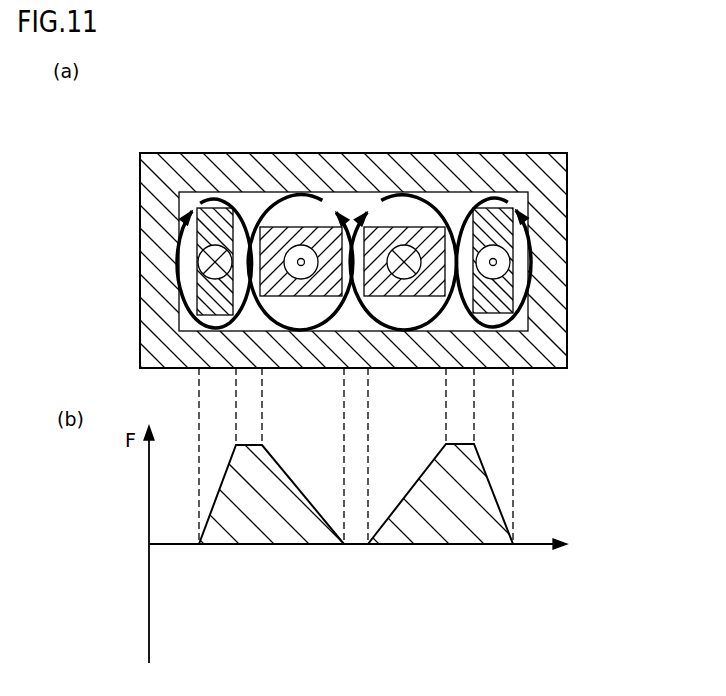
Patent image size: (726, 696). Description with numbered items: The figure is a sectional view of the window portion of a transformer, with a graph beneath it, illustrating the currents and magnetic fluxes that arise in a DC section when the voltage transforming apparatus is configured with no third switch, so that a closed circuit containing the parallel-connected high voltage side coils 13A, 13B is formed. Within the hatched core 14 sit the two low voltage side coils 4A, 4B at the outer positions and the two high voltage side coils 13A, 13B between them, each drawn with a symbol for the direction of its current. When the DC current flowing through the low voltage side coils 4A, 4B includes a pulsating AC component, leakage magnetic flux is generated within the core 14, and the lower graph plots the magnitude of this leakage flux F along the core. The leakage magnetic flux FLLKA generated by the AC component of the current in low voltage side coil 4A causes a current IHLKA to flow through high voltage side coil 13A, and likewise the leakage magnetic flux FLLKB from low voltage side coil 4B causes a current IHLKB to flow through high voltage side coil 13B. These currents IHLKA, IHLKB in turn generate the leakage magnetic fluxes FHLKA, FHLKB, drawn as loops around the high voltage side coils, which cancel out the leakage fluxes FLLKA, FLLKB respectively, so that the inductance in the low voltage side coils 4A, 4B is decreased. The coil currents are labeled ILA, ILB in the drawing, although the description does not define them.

The core 14 is at (161, 153).
The low voltage side coil 4A is at (352, 218).
The low voltage side coil 4B is at (352, 216).
The high voltage side coil 13A is at (350, 192).
The high voltage side coil 13B is at (350, 192).
The leakage magnetic flux FHLKA is at (264, 195).
The leakage magnetic flux FHLKB is at (440, 200).
The leakage magnetic flux FLLKA is at (180, 260).
The leakage magnetic flux FLLKB is at (530, 250).
The current IHLKA is at (300, 245).
The current IHLKB is at (405, 245).
The current in coil A ILA is at (200, 288).
The current in coil B ILB is at (513, 273).